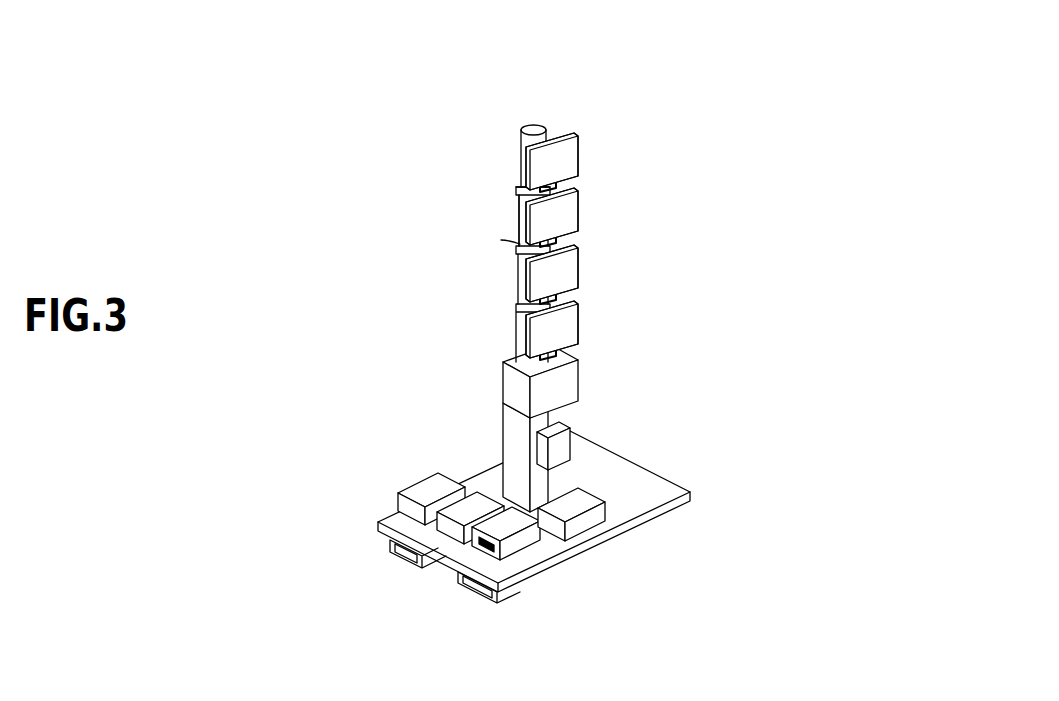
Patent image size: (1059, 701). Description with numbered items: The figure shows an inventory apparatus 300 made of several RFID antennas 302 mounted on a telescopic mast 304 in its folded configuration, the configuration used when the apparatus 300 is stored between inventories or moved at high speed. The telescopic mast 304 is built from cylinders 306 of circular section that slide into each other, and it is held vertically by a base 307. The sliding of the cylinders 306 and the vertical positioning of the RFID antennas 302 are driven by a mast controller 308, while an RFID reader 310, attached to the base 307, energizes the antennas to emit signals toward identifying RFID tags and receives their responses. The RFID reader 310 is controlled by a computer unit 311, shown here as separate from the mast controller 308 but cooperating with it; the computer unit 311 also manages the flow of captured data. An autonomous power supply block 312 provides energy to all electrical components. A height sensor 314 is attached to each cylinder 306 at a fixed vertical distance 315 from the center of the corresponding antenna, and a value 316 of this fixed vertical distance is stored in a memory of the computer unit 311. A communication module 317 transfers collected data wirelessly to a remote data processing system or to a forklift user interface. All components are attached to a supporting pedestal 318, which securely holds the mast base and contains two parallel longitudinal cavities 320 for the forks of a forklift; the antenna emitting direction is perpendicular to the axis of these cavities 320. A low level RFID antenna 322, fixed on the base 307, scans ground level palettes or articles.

The apparatus 300 is at (665, 86).
The RFID antennas 302 is at (575, 202).
The telescopic mast 304 is at (532, 116).
The cylinders 306 is at (514, 207).
The base 307 is at (506, 425).
The mast controller 308 is at (446, 527).
The RFID reader 310 is at (573, 441).
The computer unit 311 is at (524, 540).
The autonomous power supply block 312 is at (395, 500).
The height sensor 314 is at (558, 243).
The fixed vertical distance Hsa 315 is at (446, 240).
The value of the fixed vertical distance Hsa 316 is at (488, 554).
The communication module 317 is at (592, 523).
The supporting pedestal 318 is at (694, 497).
The longitudinal cavities 320 is at (470, 597).
The low level RFID antenna 322 is at (581, 386).